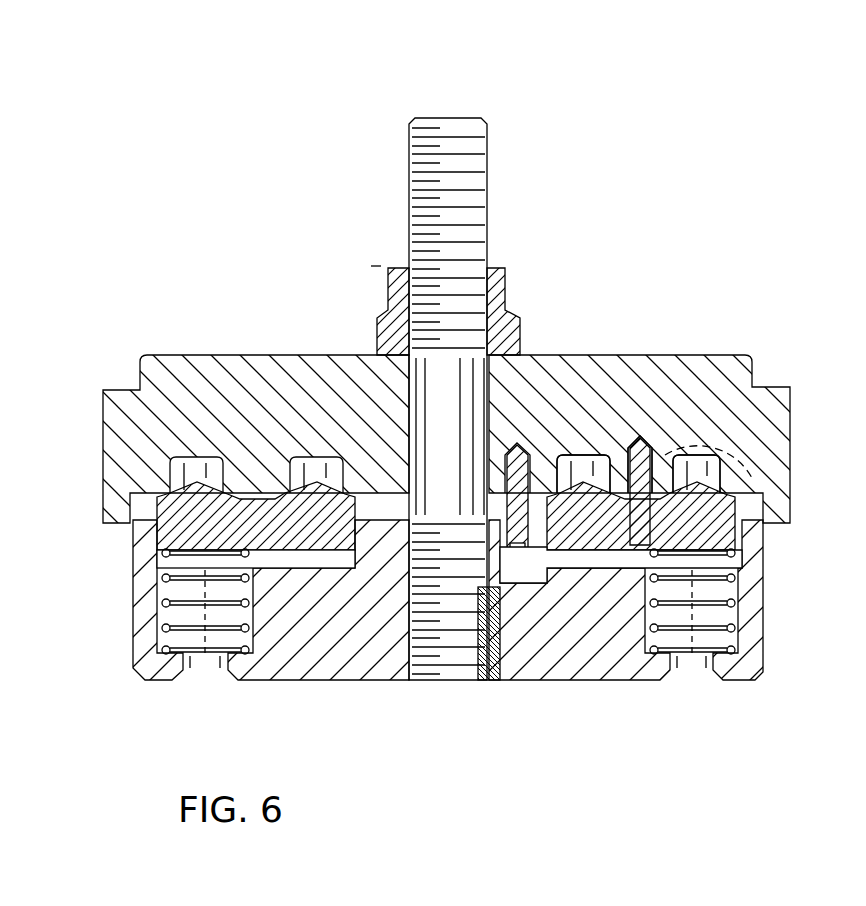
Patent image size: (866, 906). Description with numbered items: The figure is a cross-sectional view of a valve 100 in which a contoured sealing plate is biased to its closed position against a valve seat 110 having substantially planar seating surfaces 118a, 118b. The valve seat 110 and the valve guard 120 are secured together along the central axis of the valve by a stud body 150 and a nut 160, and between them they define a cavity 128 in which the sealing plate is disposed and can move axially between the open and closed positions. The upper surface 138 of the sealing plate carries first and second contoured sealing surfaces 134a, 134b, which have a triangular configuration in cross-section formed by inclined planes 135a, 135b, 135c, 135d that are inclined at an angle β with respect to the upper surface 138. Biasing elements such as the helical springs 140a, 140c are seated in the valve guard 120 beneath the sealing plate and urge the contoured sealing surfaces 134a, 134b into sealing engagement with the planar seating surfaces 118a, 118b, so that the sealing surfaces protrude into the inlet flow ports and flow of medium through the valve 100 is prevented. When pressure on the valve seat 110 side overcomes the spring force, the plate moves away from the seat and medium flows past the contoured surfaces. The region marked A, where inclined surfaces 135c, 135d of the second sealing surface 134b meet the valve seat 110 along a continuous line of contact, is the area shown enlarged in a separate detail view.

The valve 100 is at (718, 144).
The valve seat 110 is at (790, 427).
The valve guard 120 is at (762, 630).
The cavity 128 is at (200, 566).
The upper surface 138 is at (253, 497).
The stud body 150 is at (487, 178).
The nut 160 is at (508, 290).
The first contoured sealing surface 134a is at (575, 455).
The second contoured sealing surface 134b is at (716, 448).
The inclined plane 135a is at (562, 458).
The inclined plane 135b is at (640, 436).
The inclined surface 135c is at (698, 450).
The inclined surface 135d is at (762, 390).
The seating surface 118a is at (612, 496).
The seating surface 118b is at (742, 543).
The biasing element 140a is at (700, 652).
The biasing element 140c is at (205, 652).
The localized view A is at (760, 483).